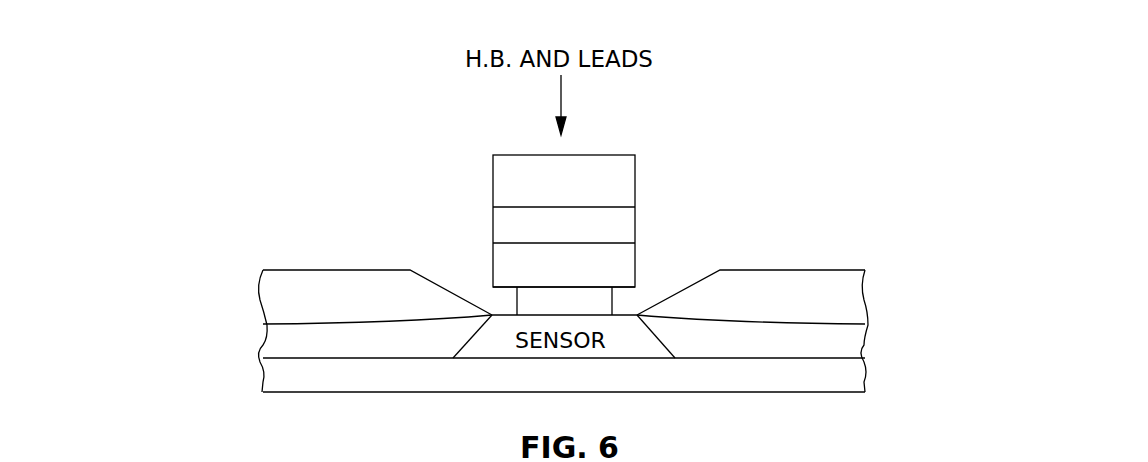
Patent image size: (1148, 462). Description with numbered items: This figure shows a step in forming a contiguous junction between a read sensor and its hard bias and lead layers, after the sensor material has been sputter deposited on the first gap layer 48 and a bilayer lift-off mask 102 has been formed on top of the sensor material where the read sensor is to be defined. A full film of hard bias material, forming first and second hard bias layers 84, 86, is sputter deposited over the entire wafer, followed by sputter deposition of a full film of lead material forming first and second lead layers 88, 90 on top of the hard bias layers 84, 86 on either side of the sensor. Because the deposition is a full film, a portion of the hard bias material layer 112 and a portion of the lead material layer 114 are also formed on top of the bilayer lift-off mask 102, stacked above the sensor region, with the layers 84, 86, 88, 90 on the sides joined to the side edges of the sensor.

The lead material layer 114 is at (500, 181).
The hard bias material layer 112 is at (636, 225).
The bilayer lift-off mask 102 is at (502, 267).
The first lead layer 88 is at (298, 287).
The second lead layer 90 is at (841, 280).
The first hard bias layer 84 is at (277, 342).
The second hard bias layer 86 is at (858, 342).
The first gap layer 48 is at (380, 378).